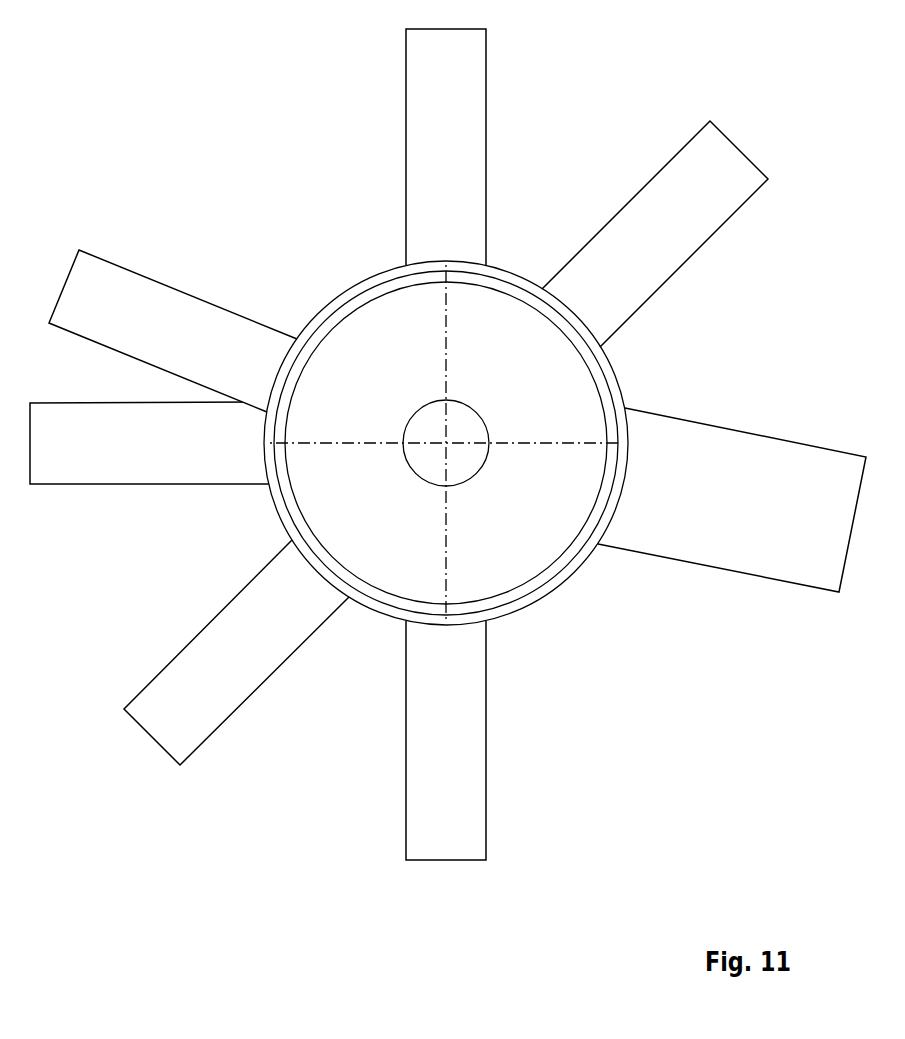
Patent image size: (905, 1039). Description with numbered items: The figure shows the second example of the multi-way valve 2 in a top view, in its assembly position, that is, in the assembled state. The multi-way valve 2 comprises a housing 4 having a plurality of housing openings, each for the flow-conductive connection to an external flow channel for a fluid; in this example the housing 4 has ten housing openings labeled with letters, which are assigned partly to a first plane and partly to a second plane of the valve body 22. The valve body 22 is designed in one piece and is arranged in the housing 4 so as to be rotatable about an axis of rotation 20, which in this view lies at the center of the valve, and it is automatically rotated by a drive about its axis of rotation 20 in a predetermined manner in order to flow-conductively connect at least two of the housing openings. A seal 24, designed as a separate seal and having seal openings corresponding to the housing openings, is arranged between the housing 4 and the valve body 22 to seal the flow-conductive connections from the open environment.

The multi-way valve 2 is at (189, 847).
The housing 4 is at (364, 606).
The seal 24 is at (397, 607).
The valve body 22 is at (492, 575).
The axis of rotation 20 is at (447, 443).